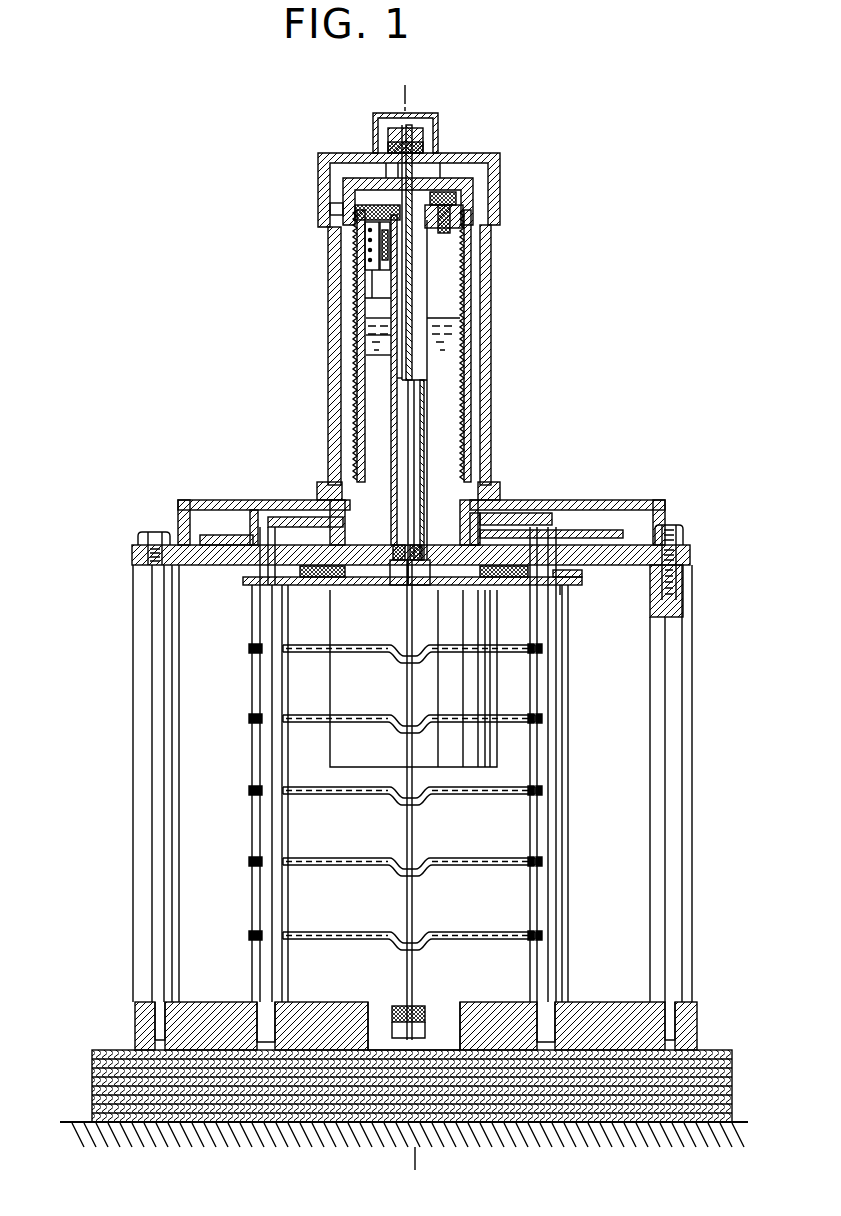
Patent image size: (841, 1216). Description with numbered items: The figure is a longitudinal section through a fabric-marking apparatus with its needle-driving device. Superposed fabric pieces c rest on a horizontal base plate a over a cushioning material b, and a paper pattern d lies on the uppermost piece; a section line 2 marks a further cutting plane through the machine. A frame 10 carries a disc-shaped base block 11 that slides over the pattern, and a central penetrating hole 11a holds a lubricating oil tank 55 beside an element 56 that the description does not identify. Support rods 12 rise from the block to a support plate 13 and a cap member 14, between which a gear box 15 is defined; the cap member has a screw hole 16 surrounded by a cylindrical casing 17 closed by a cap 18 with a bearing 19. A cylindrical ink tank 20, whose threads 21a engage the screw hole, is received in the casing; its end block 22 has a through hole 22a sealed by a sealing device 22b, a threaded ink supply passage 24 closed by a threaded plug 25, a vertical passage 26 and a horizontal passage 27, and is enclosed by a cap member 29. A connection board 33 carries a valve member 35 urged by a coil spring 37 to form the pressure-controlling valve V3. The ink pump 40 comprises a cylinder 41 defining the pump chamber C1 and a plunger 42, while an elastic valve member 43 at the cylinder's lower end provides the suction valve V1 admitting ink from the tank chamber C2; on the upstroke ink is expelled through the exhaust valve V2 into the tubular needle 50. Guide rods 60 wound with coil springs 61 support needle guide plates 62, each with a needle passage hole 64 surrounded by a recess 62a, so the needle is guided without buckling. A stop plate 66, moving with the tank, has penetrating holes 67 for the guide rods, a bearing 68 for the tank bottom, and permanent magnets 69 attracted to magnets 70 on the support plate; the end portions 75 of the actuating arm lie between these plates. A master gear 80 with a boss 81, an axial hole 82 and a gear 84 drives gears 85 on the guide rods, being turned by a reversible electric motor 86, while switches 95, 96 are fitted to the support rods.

The section line 2- 2 is at (405, 85).
The frame 10 is at (178, 503).
The base block 11 is at (137, 1030).
The penetrating hole 11a is at (370, 1008).
The support rods 12 is at (141, 930).
The support plate 13 is at (690, 552).
The cap member 14 is at (665, 505).
The gear box 15 is at (627, 505).
The screw hole 16 is at (468, 488).
The cylindrical casing 17 is at (490, 390).
The cap 18 is at (492, 212).
The bearing 19 is at (438, 140).
The cylindrical ink tank 20 is at (488, 287).
The threads 21a is at (462, 322).
The end block 22 is at (378, 205).
The through hole 22a is at (395, 190).
The sealing device 22b is at (402, 182).
The threaded ink supply passage 24 is at (446, 230).
The threaded plug 25 is at (458, 198).
The vertical passage 26 is at (333, 214).
The horizontal passage 27 is at (385, 200).
The cap member 29 is at (448, 178).
The threaded connection board 33 is at (380, 293).
The valve member 35 is at (372, 252).
The coil spring 37 is at (368, 266).
The ink pump 40 is at (391, 336).
The reciprocating cylinder 41 is at (385, 356).
The plunger 42 is at (408, 380).
The elastic valve member 43 is at (406, 598).
The tubular needle 50 is at (412, 905).
The lubricating oil tank 55 is at (422, 1006).
The bearing seat 56 is at (403, 1006).
The guide rods 60 is at (262, 838).
The coil springs 61 is at (250, 718).
The needle guide plates 62 is at (512, 647).
The recess 62a is at (398, 860).
The needle passage hole 64 is at (410, 876).
The stop plate 66 is at (563, 588).
The penetrating hole 67 is at (570, 574).
The bearing 68 is at (438, 580).
The permanent magnets 69 is at (340, 578).
The permanent magnets 70 is at (305, 578).
The end portions 75 is at (360, 582).
The master gear 80 is at (495, 540).
The boss 81 is at (495, 503).
The axial hole 82 is at (447, 562).
The gear 84 is at (527, 495).
The gears 85 is at (232, 538).
The reversible electric motor 86 is at (493, 768).
The switch 95 is at (692, 585).
The switch 96 is at (133, 625).
The pump chamber C1 is at (400, 420).
The tank chamber C2 is at (450, 435).
The suction valve means V1 is at (388, 545).
The exhaust valve V2 is at (440, 545).
The pressure-controlling valve means V3 is at (362, 236).
The base plate a is at (92, 1124).
The cushioning material b is at (94, 1112).
The fabric pieces c is at (94, 1086).
The paper pattern d is at (94, 1058).